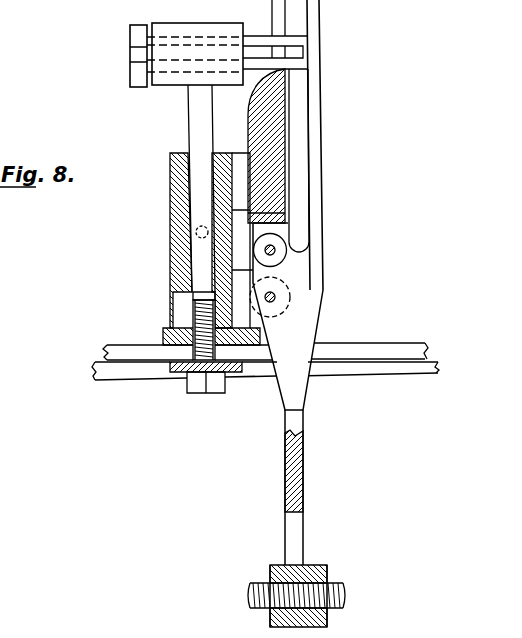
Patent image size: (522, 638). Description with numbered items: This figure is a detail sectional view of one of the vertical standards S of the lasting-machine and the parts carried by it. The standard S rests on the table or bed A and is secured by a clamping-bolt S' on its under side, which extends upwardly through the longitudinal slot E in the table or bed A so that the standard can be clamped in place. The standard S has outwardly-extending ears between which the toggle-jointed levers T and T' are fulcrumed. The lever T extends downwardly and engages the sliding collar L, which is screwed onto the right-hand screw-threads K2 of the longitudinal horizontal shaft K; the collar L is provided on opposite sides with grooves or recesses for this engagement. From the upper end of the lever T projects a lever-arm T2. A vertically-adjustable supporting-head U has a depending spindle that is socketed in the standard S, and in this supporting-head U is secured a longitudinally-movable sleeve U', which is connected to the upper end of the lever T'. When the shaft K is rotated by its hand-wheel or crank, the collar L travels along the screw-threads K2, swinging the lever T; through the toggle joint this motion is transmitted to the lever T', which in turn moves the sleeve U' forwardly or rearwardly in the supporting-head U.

The supporting-head U is at (195, 43).
The longitudinally-movable sleeve U' is at (122, 56).
The lever-arm T2 is at (323, 80).
The toggle-jointed lever T' is at (297, 151).
The toggle-jointed lever T is at (303, 394).
The vertical standard S is at (198, 222).
The clamping-bolt S' is at (206, 396).
The longitudinal slot E is at (362, 345).
The table or bed A is at (425, 343).
The collar L is at (330, 568).
The longitudinal horizontal shaft K is at (347, 595).
The right-hand screw-threads K2 is at (262, 615).